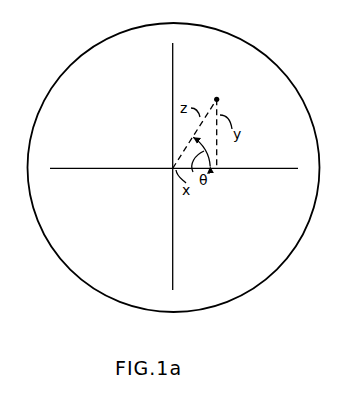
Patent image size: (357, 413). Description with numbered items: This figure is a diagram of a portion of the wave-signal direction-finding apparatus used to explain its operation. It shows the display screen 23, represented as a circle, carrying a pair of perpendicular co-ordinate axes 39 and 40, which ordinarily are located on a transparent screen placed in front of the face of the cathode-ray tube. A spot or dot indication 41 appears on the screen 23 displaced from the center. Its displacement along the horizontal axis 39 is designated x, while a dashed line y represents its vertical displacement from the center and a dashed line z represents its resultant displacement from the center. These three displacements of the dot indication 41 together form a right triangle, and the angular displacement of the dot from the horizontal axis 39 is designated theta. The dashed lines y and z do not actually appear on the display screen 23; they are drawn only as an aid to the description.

The display screen 23 is at (61, 203).
The horizontal co-ordinate axis 39 is at (115, 167).
The vertical co-ordinate axis 40 is at (174, 85).
The dot indication 41 is at (219, 99).